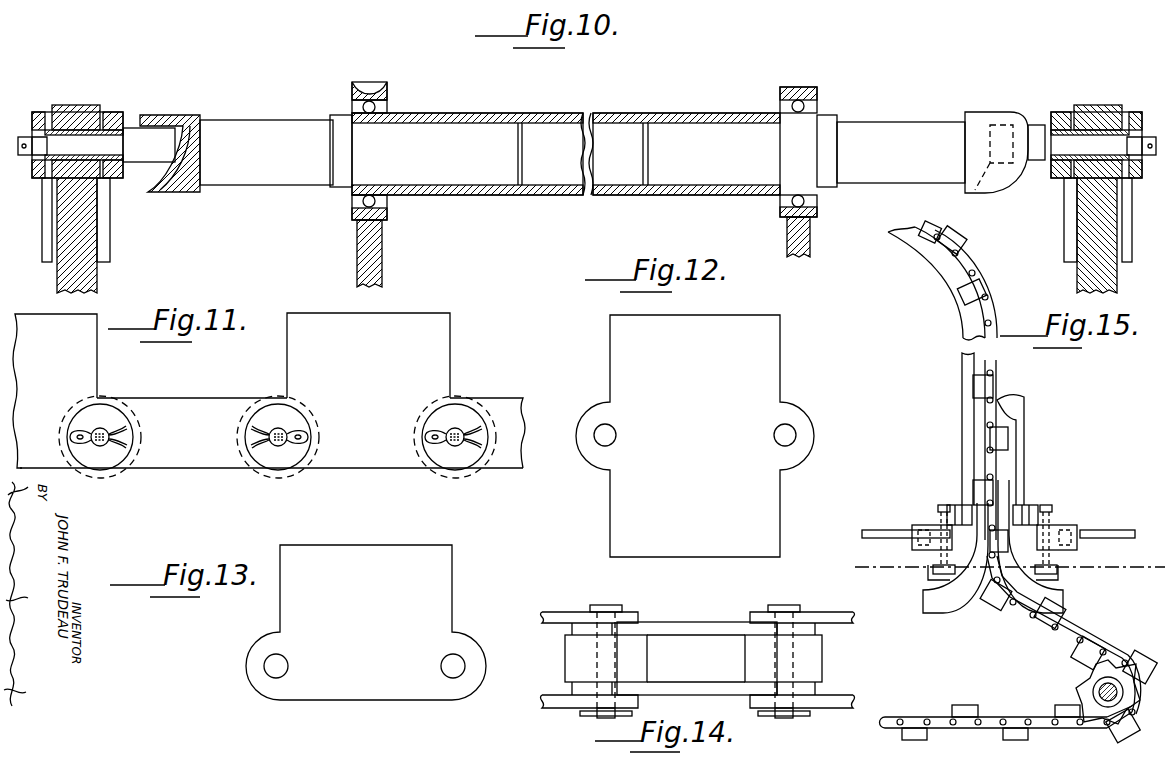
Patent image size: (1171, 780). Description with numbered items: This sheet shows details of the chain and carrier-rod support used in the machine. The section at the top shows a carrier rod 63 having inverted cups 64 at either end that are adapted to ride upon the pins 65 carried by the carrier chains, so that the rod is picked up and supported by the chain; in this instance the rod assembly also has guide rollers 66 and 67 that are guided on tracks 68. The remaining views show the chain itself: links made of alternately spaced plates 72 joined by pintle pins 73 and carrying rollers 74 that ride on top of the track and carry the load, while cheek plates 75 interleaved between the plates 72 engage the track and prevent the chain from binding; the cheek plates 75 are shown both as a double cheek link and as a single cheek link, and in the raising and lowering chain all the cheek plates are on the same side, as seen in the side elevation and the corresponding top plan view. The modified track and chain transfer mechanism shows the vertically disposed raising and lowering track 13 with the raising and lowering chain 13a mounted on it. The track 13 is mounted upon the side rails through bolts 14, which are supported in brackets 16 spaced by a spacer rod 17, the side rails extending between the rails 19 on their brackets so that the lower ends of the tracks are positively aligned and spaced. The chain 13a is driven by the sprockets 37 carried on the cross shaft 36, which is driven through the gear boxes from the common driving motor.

In FIG. 15, the raising and lowering track 13 is at (965, 408).
In FIG. 15, the raising and lowering chain 13a is at (995, 320).
In FIG. 15, the bolts 14 is at (942, 506).
In FIG. 15, the brackets 16 is at (914, 548).
In FIG. 15, the spacer rod 17 is at (875, 531).
In FIG. 15, the rails 19 is at (900, 569).
In FIG. 15, the cross shaft 36 is at (1094, 695).
In FIG. 15, the sprockets 37 is at (1090, 681).
In FIG. 10, the rod 63 is at (250, 127).
In FIG. 10, the inverted cups 64 is at (168, 123).
In FIG. 10, the pins 65 is at (150, 155).
In FIG. 10, the guide roller 66 is at (370, 92).
In FIG. 10, the guide roller 67 is at (795, 90).
In FIG. 10, the tracks 68 is at (382, 260).
In FIG. 11, the plates 72 is at (182, 404).
In FIG. 14, the plates 72 is at (548, 698).
In FIG. 11, the pintle pins 73 is at (275, 447).
In FIG. 14, the pintle pins 73 is at (600, 720).
In FIG. 11, the rollers 74 is at (118, 404).
In FIG. 14, the rollers 74 is at (638, 645).
In FIG. 11, the cheek plates 75 is at (82, 381).
In FIG. 12, the cheek plates 75 is at (735, 552).
In FIG. 13, the cheek plates 75 is at (380, 560).
In FIG. 14, the cheek plates 75 is at (675, 680).